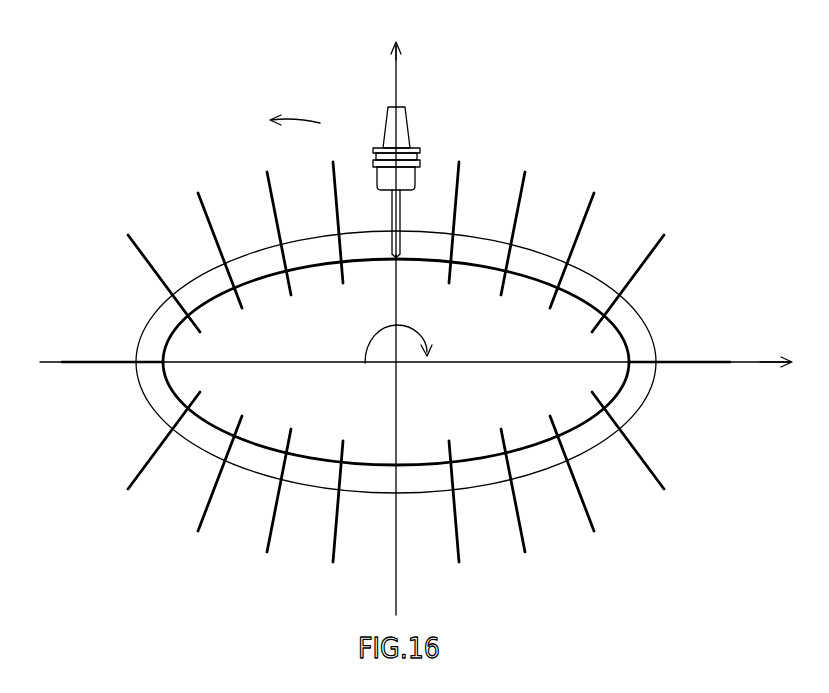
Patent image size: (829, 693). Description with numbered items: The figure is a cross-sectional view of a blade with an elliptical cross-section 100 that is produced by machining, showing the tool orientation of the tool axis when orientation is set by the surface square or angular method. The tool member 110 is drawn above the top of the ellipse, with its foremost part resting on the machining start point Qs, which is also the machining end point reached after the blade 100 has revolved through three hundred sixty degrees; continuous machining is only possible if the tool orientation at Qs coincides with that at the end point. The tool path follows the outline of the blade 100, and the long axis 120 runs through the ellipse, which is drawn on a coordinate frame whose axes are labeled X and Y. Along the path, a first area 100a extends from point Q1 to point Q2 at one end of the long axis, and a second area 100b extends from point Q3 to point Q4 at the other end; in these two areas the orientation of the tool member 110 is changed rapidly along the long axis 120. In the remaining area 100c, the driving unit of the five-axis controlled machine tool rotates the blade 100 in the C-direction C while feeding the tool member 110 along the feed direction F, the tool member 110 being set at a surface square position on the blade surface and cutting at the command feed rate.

The blade with an elliptical cross-section 100 is at (619, 253).
The first area 100a is at (139, 331).
The second area 100b is at (653, 332).
The remaining area 100c is at (542, 252).
The tool member 110 is at (403, 121).
The long axis 120 is at (365, 363).
The point Q1 is at (158, 303).
The point Q2 is at (186, 419).
The point Q3 is at (634, 421).
The point Q4 is at (634, 303).
The machining start point Qs is at (400, 259).
The X axis X is at (406, 51).
The Y axis Y is at (775, 348).
The feed direction F is at (295, 109).
The C-direction C is at (433, 349).